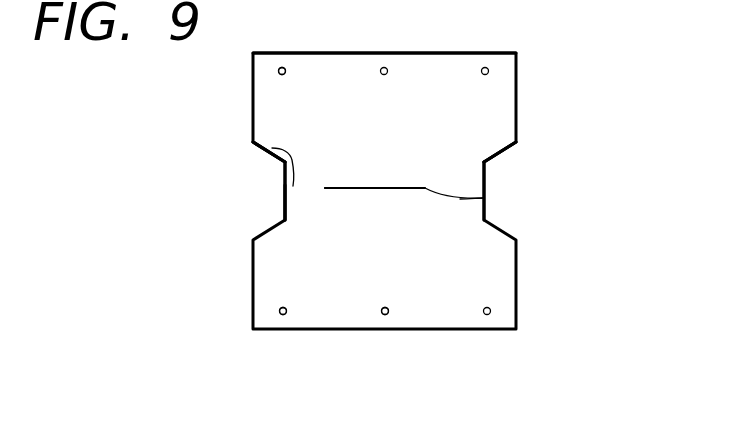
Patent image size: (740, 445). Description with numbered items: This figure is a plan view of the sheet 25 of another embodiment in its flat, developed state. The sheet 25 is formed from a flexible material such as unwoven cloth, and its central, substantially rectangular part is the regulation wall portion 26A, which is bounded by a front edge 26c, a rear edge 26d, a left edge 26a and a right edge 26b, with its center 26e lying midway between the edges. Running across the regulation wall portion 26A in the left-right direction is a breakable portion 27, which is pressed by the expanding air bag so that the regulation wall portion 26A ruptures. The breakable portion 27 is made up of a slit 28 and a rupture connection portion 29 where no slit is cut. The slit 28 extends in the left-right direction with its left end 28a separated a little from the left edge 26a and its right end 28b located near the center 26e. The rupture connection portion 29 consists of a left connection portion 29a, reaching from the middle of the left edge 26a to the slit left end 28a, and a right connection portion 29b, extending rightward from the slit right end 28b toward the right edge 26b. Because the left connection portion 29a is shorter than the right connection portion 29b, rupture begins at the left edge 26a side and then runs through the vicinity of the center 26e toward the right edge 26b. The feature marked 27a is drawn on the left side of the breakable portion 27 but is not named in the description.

The sheet 25 is at (542, 47).
The regulation wall portion 26A is at (402, 140).
The left edge 26a is at (285, 167).
The right edge 26b is at (485, 169).
The front edge 26c is at (316, 108).
The rear edge 26d is at (328, 282).
The center 26e is at (393, 188).
The breakable portion 27 is at (316, 217).
The bent portion 27a is at (285, 191).
The slit 28 is at (338, 187).
The left end of slit 28a is at (325, 185).
The right end of slit 28b is at (485, 197).
The rupture connection portion 29 is at (384, 152).
The left connection portion 29a is at (270, 152).
The right connection portion 29b is at (458, 185).